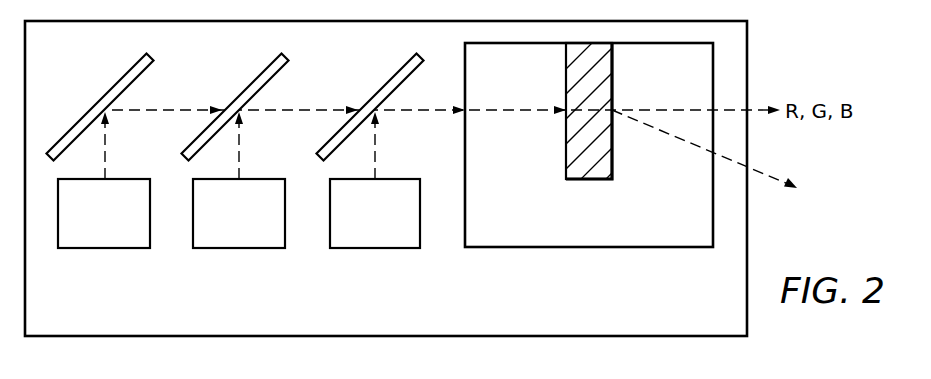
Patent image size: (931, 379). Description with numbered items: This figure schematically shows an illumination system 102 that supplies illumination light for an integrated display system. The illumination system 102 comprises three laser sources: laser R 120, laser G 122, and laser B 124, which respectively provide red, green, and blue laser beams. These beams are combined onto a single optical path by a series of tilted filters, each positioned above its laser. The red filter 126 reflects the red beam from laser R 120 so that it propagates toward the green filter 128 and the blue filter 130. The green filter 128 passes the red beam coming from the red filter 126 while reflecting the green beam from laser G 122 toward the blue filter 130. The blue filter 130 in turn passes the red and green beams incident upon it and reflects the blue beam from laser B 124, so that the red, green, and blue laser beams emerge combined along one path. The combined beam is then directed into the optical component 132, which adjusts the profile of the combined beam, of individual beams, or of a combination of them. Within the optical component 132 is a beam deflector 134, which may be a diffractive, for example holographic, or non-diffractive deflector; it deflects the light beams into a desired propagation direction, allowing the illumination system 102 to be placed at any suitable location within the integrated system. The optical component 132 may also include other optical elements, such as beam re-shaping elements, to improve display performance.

The illumination system 102 is at (748, 65).
The laser R 120 is at (92, 249).
The laser G 122 is at (227, 249).
The laser B 124 is at (362, 249).
The red filter 126 is at (120, 80).
The green filter 128 is at (255, 80).
The blue filter 130 is at (390, 80).
The optical component 132 is at (601, 248).
The beam deflector 134 is at (598, 84).